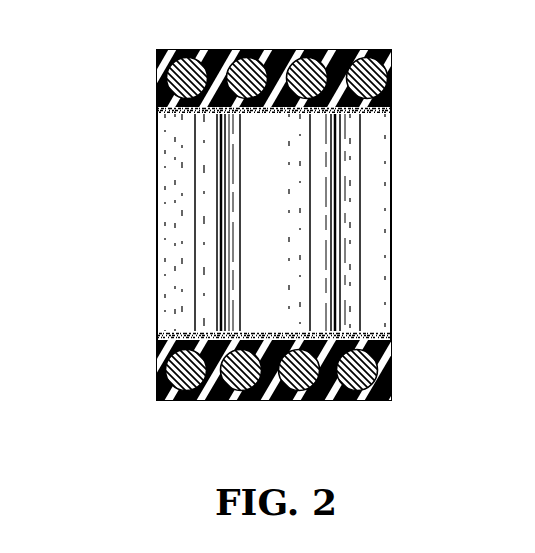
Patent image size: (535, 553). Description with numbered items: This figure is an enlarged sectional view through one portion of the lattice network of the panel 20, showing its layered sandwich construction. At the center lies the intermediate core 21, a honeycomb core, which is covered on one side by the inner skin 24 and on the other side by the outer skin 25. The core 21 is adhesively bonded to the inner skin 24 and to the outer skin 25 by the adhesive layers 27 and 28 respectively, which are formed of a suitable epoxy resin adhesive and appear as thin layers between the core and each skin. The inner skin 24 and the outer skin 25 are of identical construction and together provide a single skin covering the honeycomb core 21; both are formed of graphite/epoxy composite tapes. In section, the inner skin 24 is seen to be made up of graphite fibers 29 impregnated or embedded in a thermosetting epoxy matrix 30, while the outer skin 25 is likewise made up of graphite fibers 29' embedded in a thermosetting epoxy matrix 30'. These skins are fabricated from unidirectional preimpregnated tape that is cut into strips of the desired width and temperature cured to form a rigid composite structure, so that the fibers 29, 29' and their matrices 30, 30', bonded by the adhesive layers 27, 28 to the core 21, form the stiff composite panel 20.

The panel 20 is at (118, 193).
The intermediate core 21 is at (155, 230).
The inner skin 24 is at (286, 383).
The outer skin 25 is at (263, 69).
The adhesive layer 27 is at (376, 336).
The adhesive layer 28 is at (383, 112).
The graphite fibers 29 is at (271, 391).
The thermosetting epoxy matrix 30 is at (281, 382).
The graphite fibers 29' is at (277, 59).
The thermosetting epoxy matrix 30' is at (282, 69).